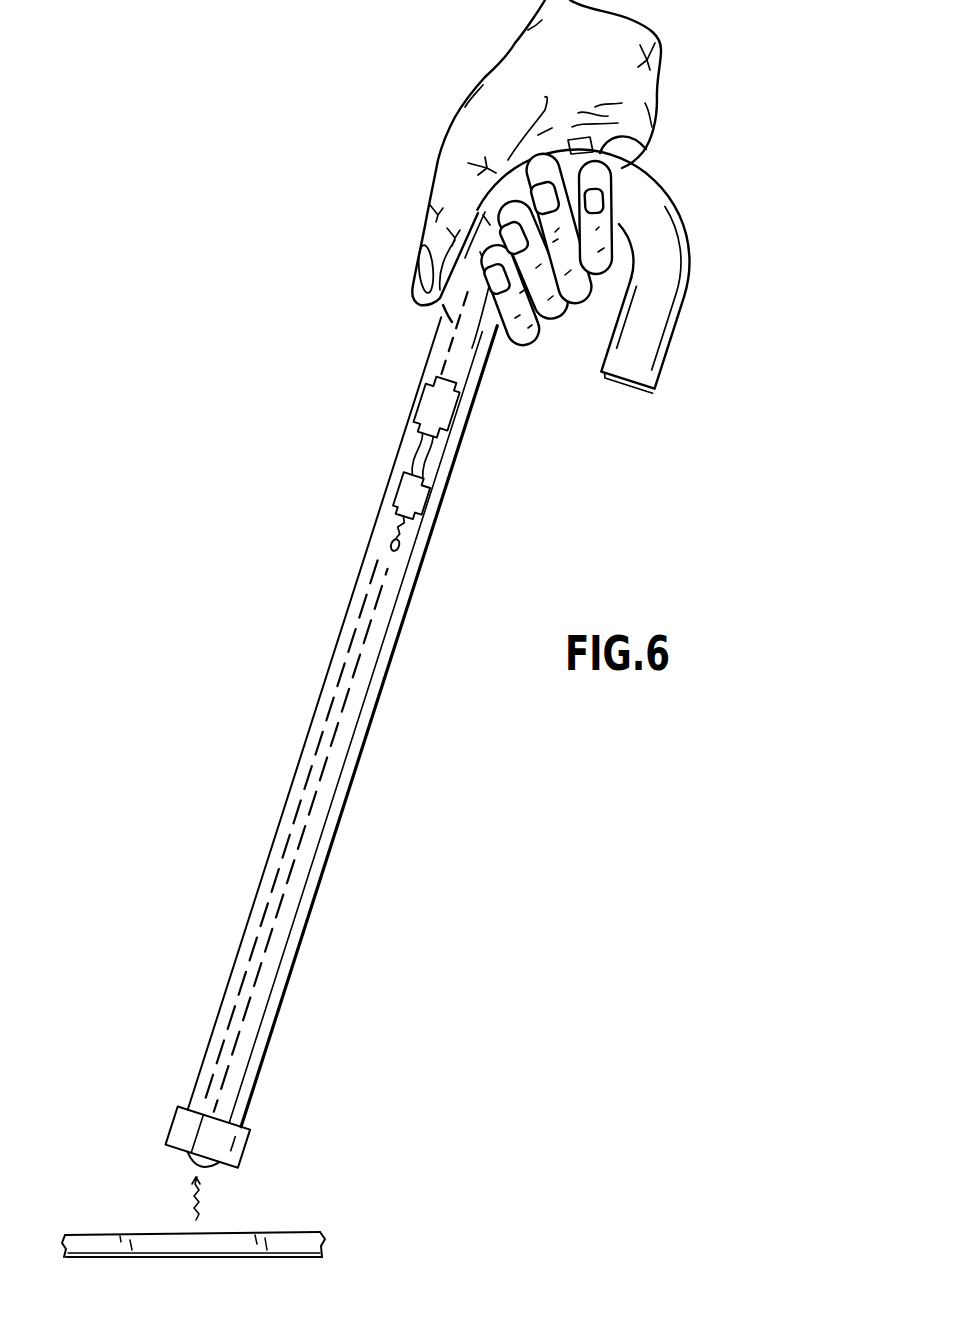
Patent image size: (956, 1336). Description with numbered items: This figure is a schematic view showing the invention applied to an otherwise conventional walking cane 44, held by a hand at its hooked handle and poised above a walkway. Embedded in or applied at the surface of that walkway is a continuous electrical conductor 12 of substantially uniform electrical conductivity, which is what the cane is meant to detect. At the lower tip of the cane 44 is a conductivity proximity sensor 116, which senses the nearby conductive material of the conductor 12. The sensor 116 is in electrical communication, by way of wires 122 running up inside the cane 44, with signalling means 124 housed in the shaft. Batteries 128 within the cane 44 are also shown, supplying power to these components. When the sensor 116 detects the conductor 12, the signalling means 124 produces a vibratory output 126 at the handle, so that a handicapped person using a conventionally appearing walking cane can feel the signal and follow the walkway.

The continuous electrical conductor 12 is at (295, 1235).
The cane 44 is at (307, 738).
The conductivity proximity sensor 116 is at (188, 1167).
The wires 122 is at (308, 877).
The signalling means 124 is at (423, 495).
The vibratory output 126 is at (643, 147).
The batteries 128 is at (427, 412).